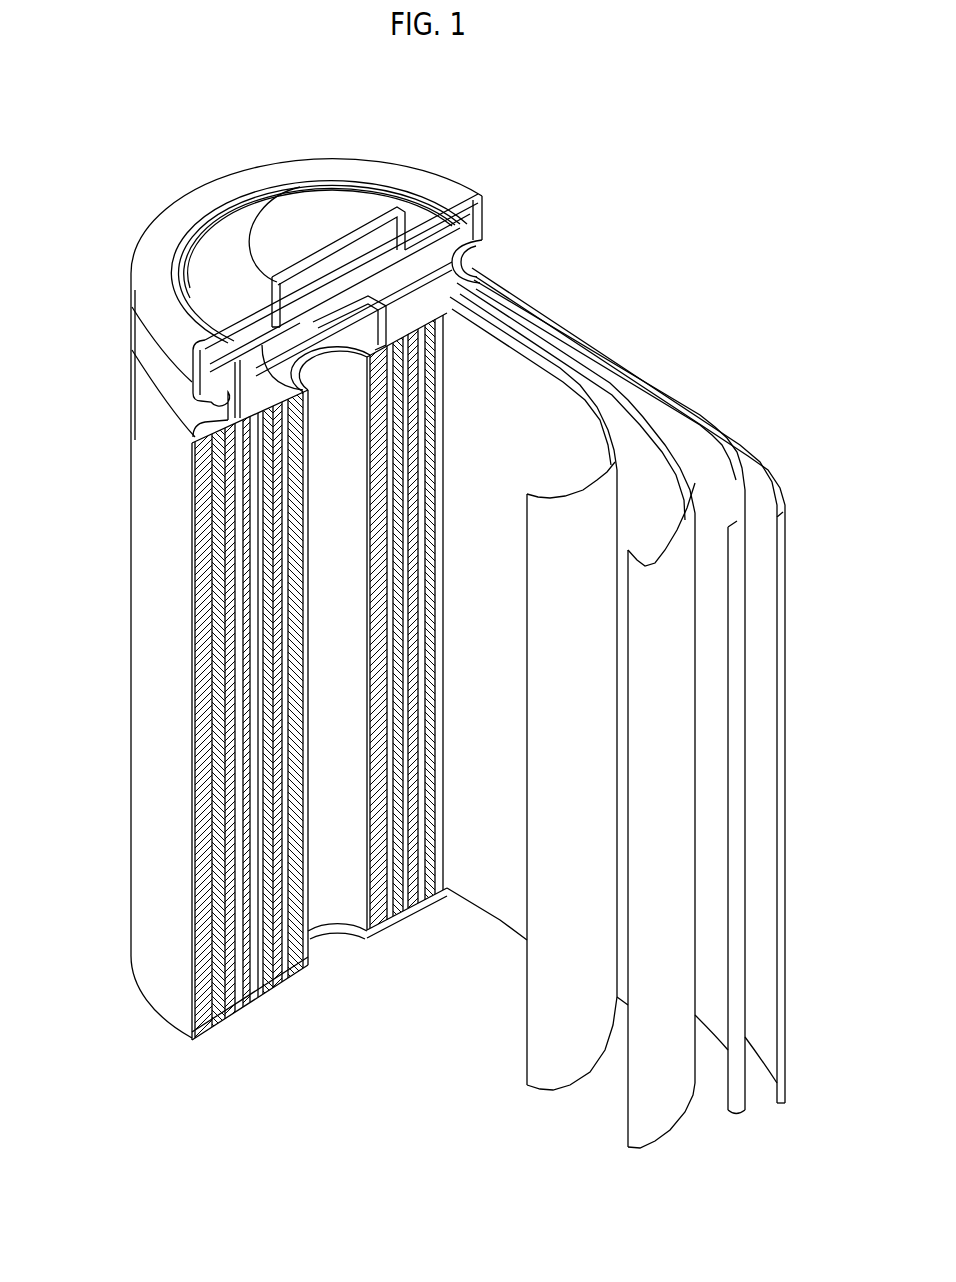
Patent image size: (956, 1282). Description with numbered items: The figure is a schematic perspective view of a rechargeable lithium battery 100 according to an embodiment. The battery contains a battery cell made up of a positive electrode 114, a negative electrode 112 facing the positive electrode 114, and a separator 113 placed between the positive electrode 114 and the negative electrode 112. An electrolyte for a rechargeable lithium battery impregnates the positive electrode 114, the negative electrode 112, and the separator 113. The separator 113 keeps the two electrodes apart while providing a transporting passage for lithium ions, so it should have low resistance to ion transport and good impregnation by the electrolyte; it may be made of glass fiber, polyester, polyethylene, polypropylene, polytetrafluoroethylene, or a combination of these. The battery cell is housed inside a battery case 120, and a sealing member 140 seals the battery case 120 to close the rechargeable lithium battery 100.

The rechargeable lithium battery 100 is at (483, 142).
The negative electrode 112 is at (747, 453).
The separator 113 is at (530, 352).
The positive electrode 114 is at (630, 422).
The battery case 120 is at (140, 650).
The sealing member 140 is at (290, 215).